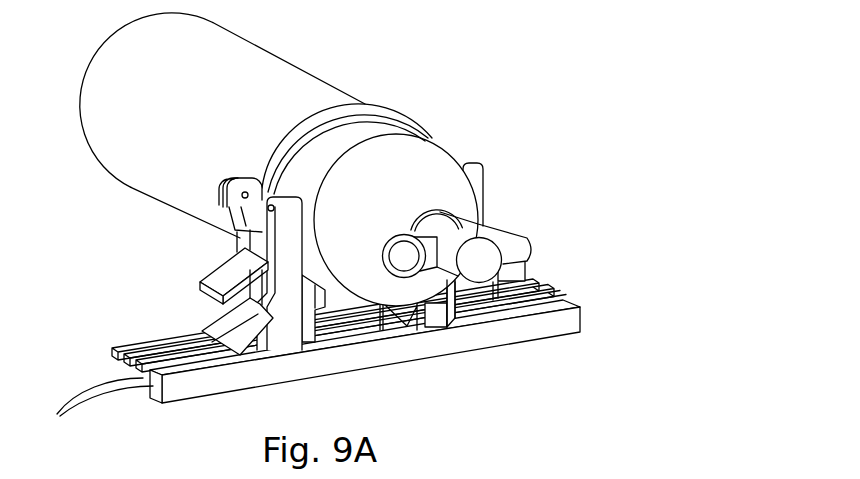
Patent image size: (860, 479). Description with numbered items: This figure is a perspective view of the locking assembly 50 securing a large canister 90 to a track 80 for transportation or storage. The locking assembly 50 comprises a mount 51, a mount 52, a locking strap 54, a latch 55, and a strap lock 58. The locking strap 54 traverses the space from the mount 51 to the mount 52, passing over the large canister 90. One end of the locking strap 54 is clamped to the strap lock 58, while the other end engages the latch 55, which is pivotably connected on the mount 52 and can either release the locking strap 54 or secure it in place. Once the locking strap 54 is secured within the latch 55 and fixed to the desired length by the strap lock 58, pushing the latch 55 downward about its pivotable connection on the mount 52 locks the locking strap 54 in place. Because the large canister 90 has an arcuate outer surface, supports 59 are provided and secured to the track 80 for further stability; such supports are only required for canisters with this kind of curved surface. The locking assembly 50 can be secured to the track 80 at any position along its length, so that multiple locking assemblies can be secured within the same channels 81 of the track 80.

The locking assembly 50 is at (624, 58).
The mount 51 is at (484, 301).
The mount 52 is at (270, 345).
The locking strap 54 is at (398, 97).
The latch 55 is at (193, 262).
The strap lock 58 is at (537, 237).
The supports 59 is at (430, 330).
The track 80 is at (580, 294).
The channels 81 is at (98, 411).
The large canister 90 is at (306, 56).